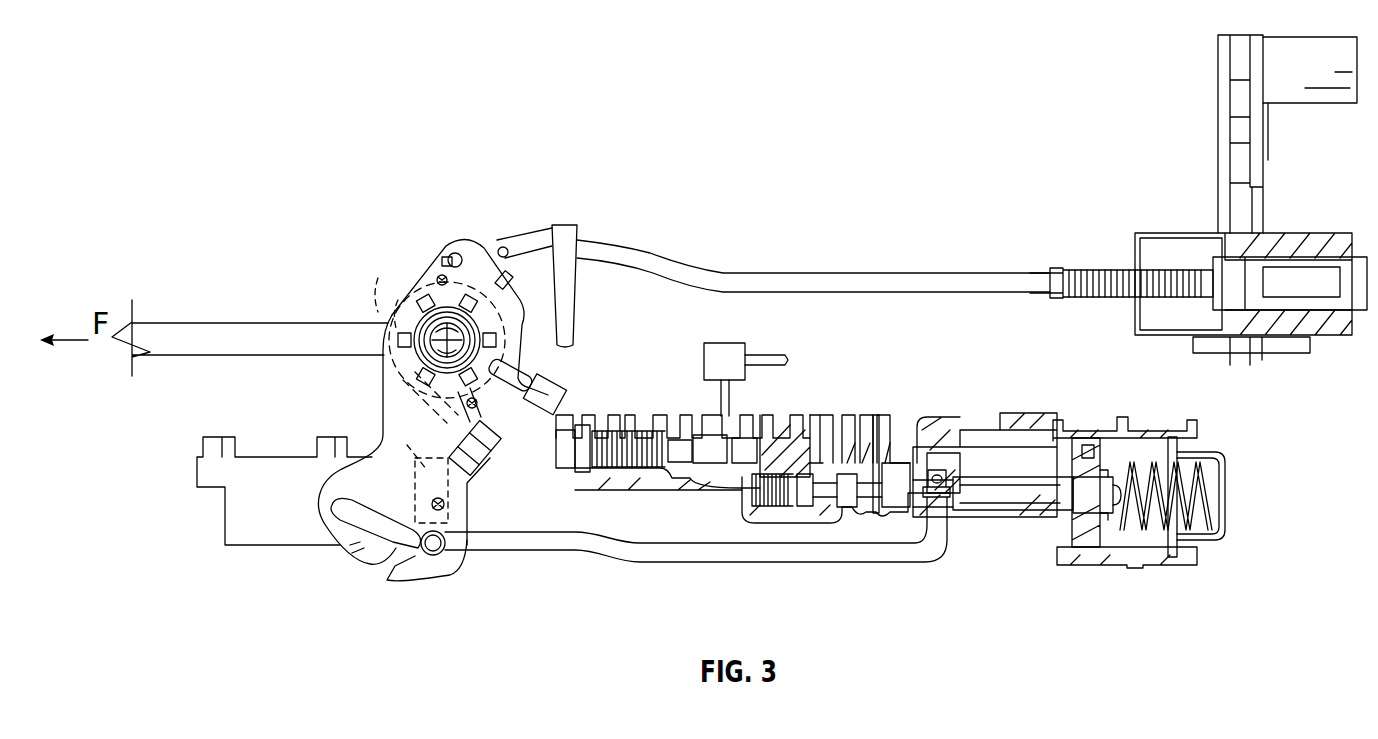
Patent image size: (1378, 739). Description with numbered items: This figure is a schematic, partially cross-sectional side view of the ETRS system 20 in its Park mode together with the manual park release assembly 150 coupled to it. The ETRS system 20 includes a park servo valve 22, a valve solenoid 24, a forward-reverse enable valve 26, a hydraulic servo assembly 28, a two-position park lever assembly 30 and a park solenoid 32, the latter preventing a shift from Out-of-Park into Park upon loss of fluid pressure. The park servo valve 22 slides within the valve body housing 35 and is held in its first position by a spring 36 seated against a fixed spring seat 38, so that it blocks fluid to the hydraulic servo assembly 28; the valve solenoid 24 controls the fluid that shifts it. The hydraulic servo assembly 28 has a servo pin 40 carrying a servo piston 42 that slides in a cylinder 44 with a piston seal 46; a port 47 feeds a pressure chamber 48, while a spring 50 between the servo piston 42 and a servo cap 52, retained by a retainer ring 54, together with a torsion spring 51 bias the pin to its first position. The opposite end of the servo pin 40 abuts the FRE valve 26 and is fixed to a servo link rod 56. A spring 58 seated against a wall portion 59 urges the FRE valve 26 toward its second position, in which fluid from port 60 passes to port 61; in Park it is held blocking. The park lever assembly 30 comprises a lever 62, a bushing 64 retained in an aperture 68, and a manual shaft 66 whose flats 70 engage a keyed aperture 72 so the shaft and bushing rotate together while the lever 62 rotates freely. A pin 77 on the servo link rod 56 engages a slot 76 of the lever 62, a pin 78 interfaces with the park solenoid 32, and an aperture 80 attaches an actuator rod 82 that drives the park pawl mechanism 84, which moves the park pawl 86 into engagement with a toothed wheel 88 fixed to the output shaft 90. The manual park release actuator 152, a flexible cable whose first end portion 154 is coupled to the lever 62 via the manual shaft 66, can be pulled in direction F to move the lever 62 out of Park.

The ETRS system 20 is at (870, 229).
The park servo valve 22 is at (702, 469).
The valve solenoid 24 is at (727, 343).
The forward-reverse enable (FRE) valve 26 is at (797, 522).
The hydraulic servo assembly 28 is at (1110, 624).
The park lever assembly 30 is at (371, 397).
The park solenoid 32 is at (259, 572).
The valve body housing 35 is at (948, 428).
The spring 36 is at (606, 478).
The fixed spring seat 38 is at (553, 448).
The servo pin 40 is at (1000, 512).
The servo piston 42 is at (1085, 567).
The cylinder 44 is at (1135, 567).
The piston seal 46 is at (1065, 545).
The port 47 is at (1050, 423).
The pressure chamber 48 is at (1055, 456).
The spring 50 is at (1205, 450).
The torsion spring 51 is at (512, 284).
The servo cap 52 is at (1228, 465).
The retainer ring 54 is at (1180, 545).
The servo link rod 56 is at (905, 565).
The spring 58 is at (767, 522).
The wall portion 59 is at (745, 492).
The port 60 is at (855, 404).
The port 61 is at (831, 404).
The lever 62 is at (375, 438).
The bushing 64 is at (435, 308).
The manual shaft 66 is at (504, 246).
The aperture 68 is at (380, 328).
The flats 70 is at (402, 300).
The keyed aperture 72 is at (487, 415).
The slot 76 is at (392, 560).
The pin 77 is at (447, 540).
The pin 78 is at (447, 502).
The aperture 80 is at (455, 253).
The actuator rod 82 is at (655, 255).
The park pawl mechanism 84 is at (1185, 208).
The park pawl 86 is at (1222, 325).
The toothed wheel 88 is at (1228, 108).
The output shaft 90 is at (1318, 104).
The manual park release assembly 150 is at (277, 309).
The manual park release actuator 152 is at (182, 321).
The first end portion 154 is at (372, 286).